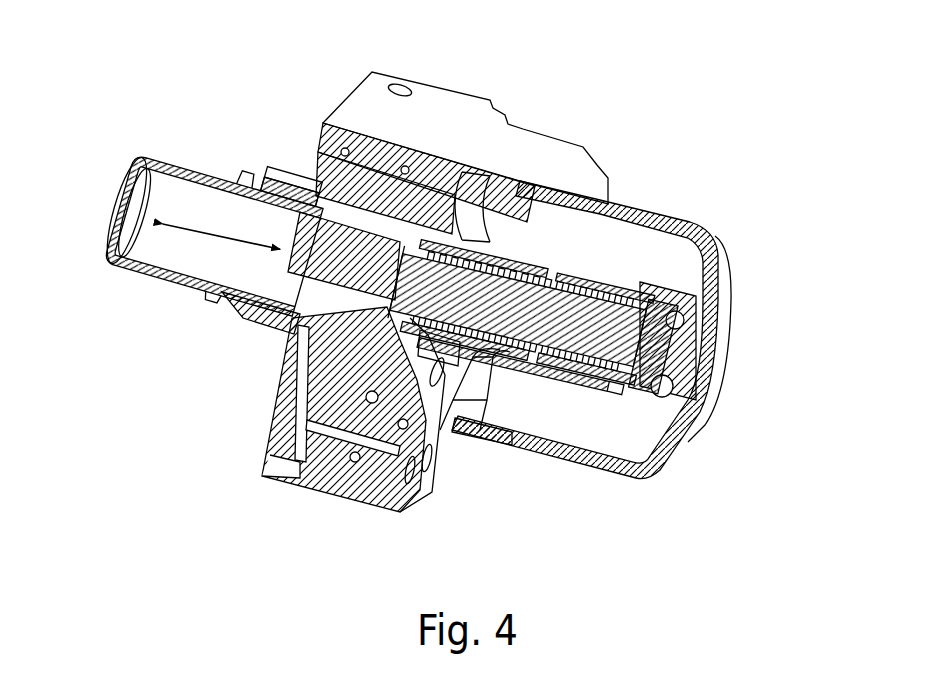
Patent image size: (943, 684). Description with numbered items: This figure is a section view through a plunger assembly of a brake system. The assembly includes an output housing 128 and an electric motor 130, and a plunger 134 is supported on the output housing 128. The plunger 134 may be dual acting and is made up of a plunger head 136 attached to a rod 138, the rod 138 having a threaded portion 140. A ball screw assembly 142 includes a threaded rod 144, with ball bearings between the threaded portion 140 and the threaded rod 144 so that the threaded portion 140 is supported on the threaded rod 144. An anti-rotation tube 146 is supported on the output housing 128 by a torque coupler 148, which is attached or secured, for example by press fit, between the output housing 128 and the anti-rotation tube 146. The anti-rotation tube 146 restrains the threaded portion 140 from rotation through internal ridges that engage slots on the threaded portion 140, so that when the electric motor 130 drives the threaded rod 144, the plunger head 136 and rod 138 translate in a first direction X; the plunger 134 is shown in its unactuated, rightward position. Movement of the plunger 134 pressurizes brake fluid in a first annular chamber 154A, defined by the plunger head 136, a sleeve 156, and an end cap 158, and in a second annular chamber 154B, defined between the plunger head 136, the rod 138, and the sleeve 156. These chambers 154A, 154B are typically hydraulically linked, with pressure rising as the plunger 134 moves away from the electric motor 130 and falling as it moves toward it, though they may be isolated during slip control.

The output housing 128 is at (452, 117).
The electric motor 130 is at (605, 437).
The plunger 134 is at (505, 246).
The plunger head 136 is at (258, 300).
The rod 138 is at (400, 300).
The threaded portion 140 is at (590, 340).
The ball screw assembly 142 is at (636, 325).
The threaded rod 144 is at (553, 350).
The anti-rotation tube 146 is at (580, 300).
The torque coupler 148 is at (460, 362).
The first annular chamber 154A is at (162, 243).
The second annular chamber 154B is at (320, 195).
The sleeve 156 is at (193, 165).
The end cap 158 is at (116, 233).
The first direction X is at (227, 215).